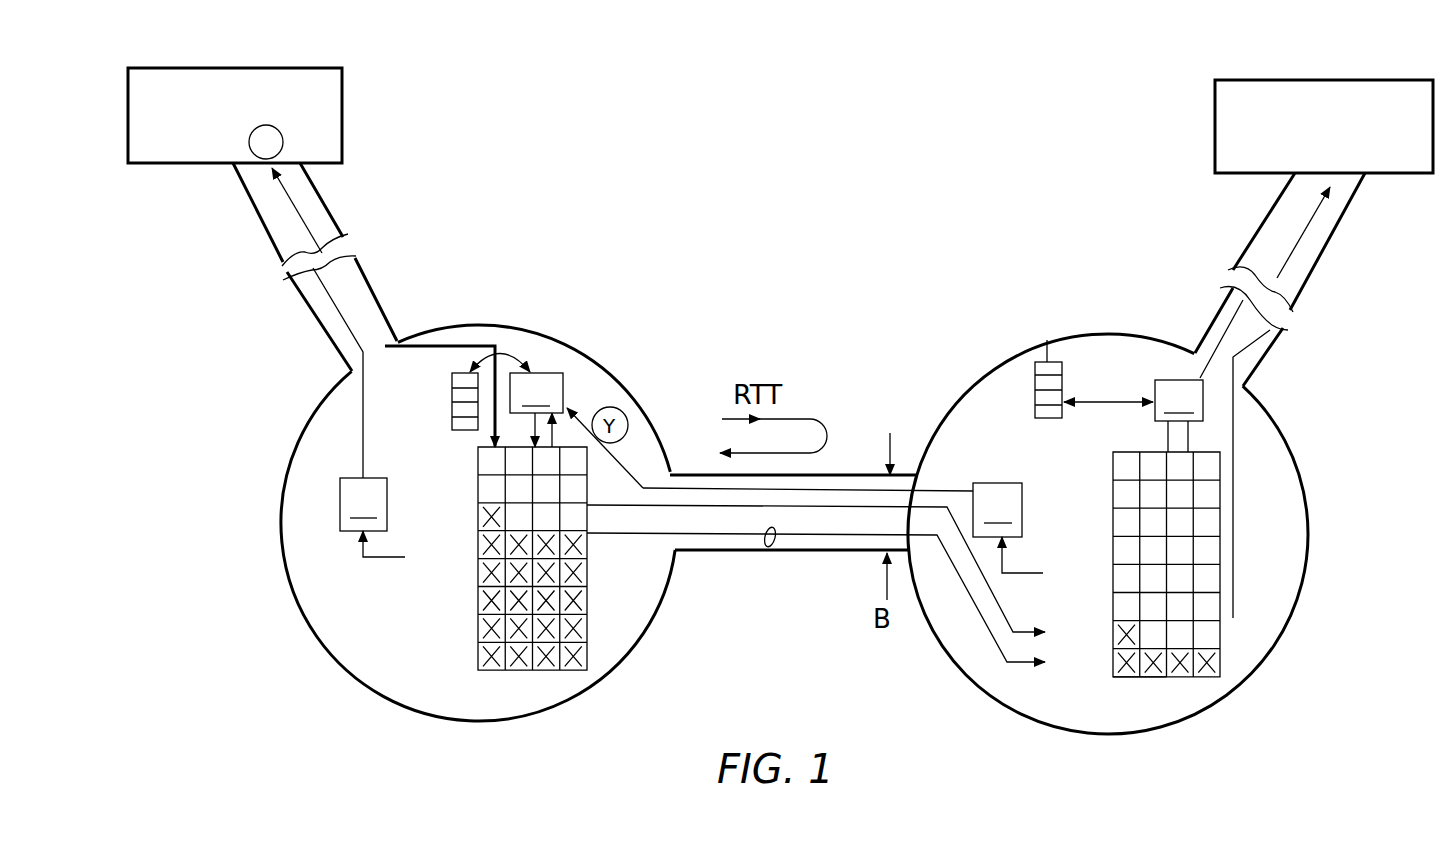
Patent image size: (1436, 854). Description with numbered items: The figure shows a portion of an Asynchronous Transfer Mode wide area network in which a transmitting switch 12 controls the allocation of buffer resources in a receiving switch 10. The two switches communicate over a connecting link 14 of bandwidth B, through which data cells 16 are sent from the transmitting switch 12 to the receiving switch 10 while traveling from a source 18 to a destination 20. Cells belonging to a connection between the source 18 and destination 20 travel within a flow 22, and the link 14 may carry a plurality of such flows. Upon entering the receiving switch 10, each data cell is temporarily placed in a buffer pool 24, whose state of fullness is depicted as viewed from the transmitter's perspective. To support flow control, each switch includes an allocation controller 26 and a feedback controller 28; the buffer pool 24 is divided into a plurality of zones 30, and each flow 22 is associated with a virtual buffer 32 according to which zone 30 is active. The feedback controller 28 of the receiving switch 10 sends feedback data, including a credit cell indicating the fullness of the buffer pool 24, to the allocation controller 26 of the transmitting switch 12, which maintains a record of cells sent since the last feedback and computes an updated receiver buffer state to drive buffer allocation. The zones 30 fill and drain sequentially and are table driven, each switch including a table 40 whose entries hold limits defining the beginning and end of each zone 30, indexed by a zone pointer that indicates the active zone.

The receiving switch 10 is at (1273, 416).
The transmitting switch 12 is at (533, 327).
The connecting link 14 is at (850, 553).
The data cells 16 is at (587, 597).
The source 18 is at (178, 68).
The destination 20 is at (1256, 80).
The flow 22 is at (770, 548).
The buffer pool 24 is at (1113, 450).
The allocation controller 26 is at (836, 403).
The feedback controller 28 is at (691, 525).
The zones 30 is at (1223, 632).
The virtual buffer 32 is at (1122, 680).
The table 40 is at (452, 375).